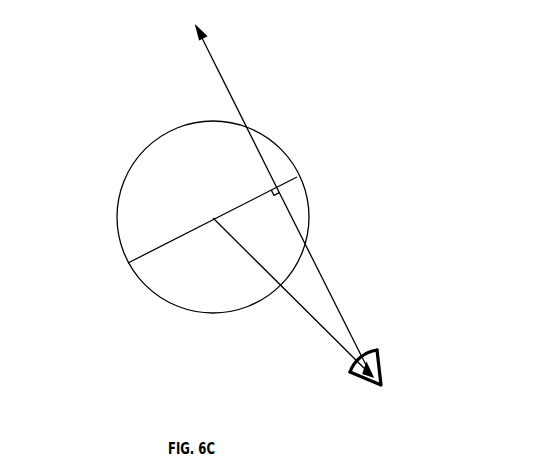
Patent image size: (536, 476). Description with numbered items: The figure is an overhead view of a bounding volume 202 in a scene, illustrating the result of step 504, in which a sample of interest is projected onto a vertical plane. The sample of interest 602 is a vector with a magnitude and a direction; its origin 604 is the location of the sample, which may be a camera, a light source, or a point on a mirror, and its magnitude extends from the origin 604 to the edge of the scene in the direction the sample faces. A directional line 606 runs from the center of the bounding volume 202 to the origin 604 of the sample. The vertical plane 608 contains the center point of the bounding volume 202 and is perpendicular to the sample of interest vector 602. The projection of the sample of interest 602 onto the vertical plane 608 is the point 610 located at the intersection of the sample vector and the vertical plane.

The step 504 is at (244, 106).
The sample of interest vector 602 is at (333, 293).
The bounding volume 202 is at (122, 195).
The vertical plane 608 is at (138, 258).
The point 610 is at (279, 186).
The directional line 606 is at (320, 323).
The origin 604 is at (383, 386).